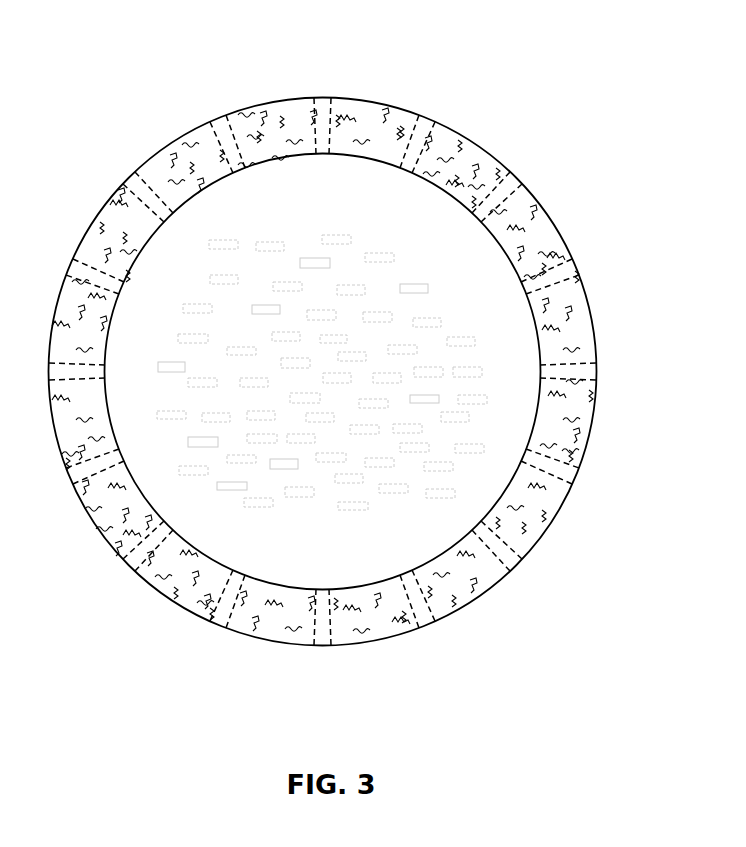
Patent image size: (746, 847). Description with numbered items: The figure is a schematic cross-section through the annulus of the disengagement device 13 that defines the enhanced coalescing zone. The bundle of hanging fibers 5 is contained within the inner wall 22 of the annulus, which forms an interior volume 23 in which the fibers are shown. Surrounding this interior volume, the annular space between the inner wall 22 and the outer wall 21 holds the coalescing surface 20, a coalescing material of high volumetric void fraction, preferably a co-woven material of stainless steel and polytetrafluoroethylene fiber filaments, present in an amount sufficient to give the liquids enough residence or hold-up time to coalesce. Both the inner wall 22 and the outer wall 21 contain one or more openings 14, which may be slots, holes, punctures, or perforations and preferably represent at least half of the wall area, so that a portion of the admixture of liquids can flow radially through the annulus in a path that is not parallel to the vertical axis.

The disengagement device 13 is at (393, 108).
The openings 14 is at (595, 370).
The interior volume 23 is at (165, 269).
The hanging fibers 5 is at (428, 320).
The inner wall 22 is at (263, 574).
The coalescing surface 20 is at (372, 612).
The outer wall 21 is at (515, 568).